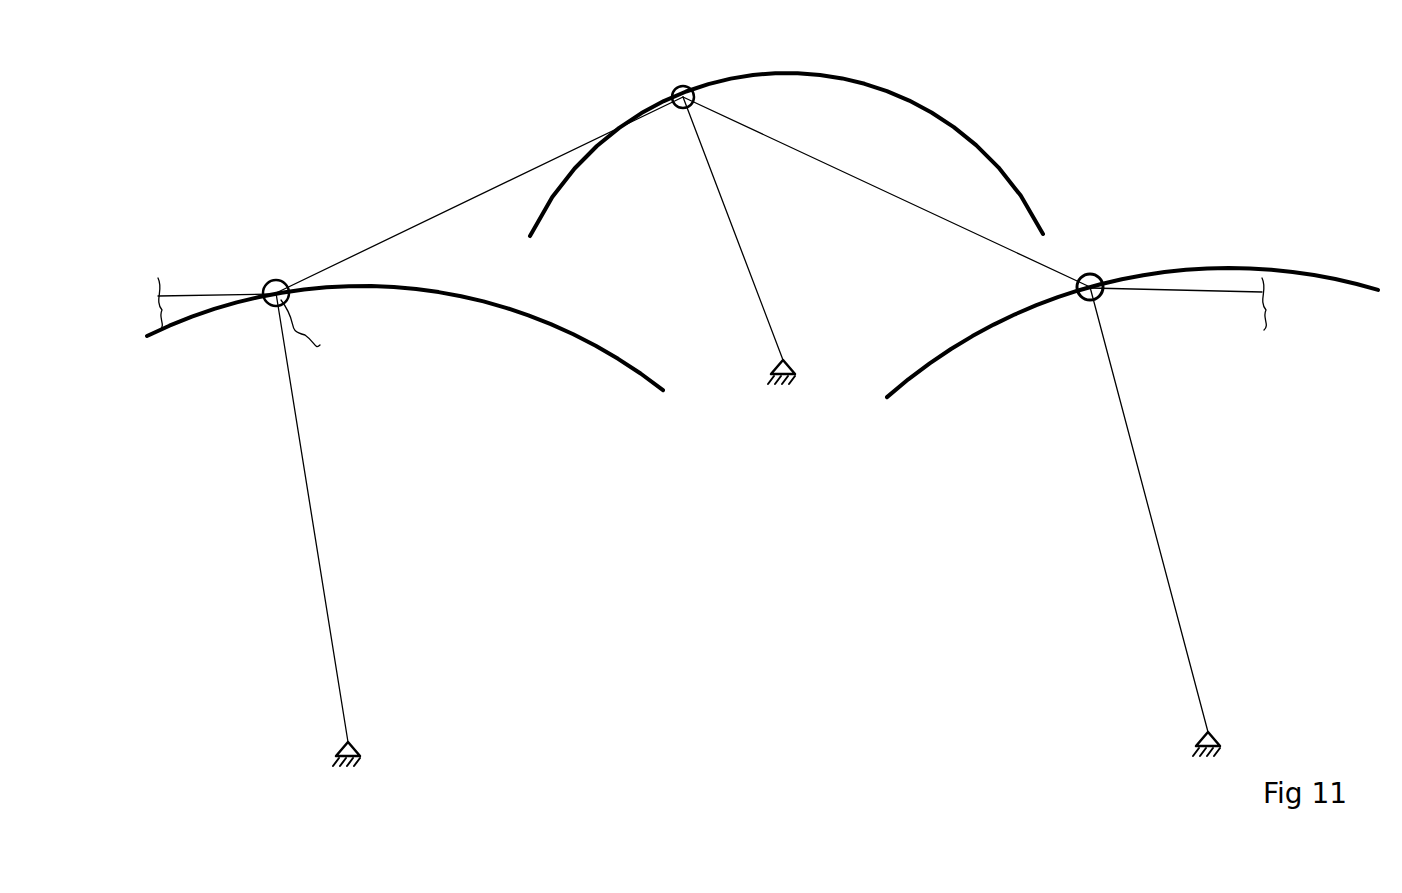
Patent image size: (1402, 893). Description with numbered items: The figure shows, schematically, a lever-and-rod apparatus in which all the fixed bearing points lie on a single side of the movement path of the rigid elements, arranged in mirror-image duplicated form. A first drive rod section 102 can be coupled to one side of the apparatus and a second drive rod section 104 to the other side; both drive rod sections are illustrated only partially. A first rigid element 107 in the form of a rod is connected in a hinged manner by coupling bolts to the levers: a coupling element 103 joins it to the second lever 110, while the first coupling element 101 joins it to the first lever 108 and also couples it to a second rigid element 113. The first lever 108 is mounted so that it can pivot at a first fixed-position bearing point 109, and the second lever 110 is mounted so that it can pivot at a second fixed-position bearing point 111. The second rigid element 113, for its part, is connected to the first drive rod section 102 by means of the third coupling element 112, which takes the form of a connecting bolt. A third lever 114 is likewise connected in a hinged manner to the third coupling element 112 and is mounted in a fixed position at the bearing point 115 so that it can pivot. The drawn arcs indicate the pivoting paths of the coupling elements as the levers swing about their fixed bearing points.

The first coupling element 101 is at (688, 90).
The first drive rod section 102 is at (218, 292).
The coupling element 103 is at (1097, 270).
The second drive rod section 104 is at (1180, 295).
The first rigid element 107 is at (865, 183).
The first lever 108 is at (745, 242).
The first fixed-position bearing point 109 is at (795, 354).
The second lever 110 is at (1165, 548).
The second fixed-position bearing point 111 is at (1218, 730).
The third coupling element 112 is at (342, 335).
The second rigid element 113 is at (460, 200).
The third lever 114 is at (318, 522).
The bearing point 115 is at (356, 740).